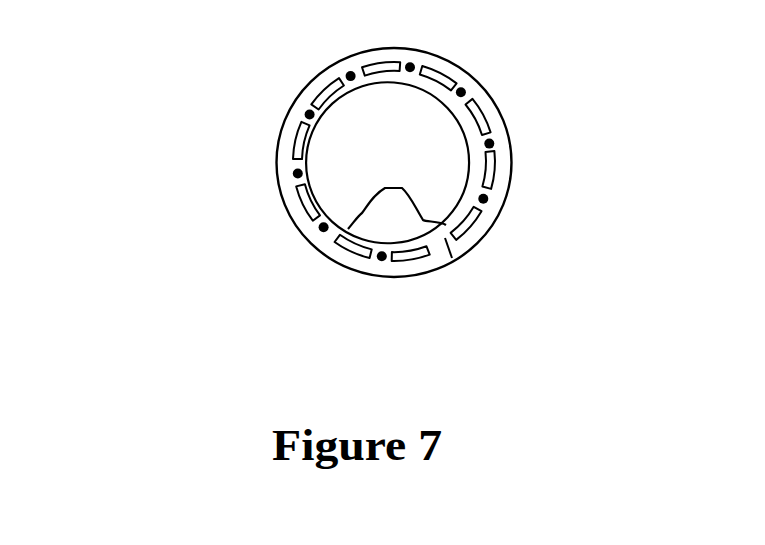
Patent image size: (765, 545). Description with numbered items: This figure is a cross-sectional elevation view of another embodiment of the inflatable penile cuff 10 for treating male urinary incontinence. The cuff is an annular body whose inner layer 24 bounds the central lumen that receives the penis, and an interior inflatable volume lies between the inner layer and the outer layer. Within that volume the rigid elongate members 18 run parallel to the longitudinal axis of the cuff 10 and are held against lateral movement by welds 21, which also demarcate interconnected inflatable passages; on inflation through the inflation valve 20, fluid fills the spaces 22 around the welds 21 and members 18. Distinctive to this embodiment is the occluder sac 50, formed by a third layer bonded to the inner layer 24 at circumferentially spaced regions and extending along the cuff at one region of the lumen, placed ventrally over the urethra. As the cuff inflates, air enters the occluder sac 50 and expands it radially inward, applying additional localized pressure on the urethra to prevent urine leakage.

The penile cuff 10 is at (365, 201).
The rigid elongate members 18 is at (483, 112).
The inflation valve 20 is at (437, 242).
The welds 21 is at (490, 142).
The spaces 22 is at (490, 210).
The inner layer 24 is at (308, 162).
The occluder sac 50 is at (377, 217).